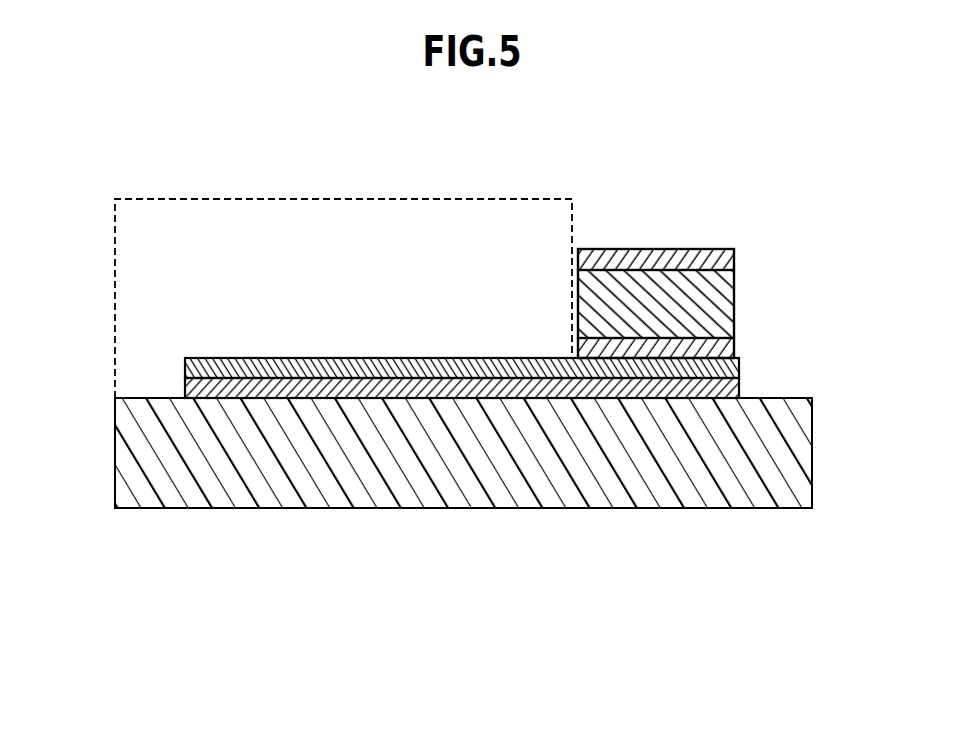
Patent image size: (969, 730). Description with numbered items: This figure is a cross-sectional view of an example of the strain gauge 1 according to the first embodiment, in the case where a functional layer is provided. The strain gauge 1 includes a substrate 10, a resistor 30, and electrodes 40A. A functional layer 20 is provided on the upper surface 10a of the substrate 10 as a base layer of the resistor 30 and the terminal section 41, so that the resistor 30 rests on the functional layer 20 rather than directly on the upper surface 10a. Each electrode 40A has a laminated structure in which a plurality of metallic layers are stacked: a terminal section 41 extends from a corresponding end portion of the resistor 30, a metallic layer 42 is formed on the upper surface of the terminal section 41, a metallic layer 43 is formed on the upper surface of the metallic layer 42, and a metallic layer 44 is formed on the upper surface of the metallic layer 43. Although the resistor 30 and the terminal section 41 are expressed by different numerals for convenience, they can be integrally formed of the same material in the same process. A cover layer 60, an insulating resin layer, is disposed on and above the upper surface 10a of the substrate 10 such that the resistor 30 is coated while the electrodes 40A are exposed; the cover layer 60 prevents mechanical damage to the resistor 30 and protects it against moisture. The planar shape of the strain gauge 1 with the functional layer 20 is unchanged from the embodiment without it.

The strain gauge 1 is at (36, 161).
The substrate 10 is at (135, 458).
The upper surface of the substrate 10a is at (195, 396).
The functional layer 20 is at (195, 388).
The resistor 30 is at (185, 352).
The electrode 40A is at (866, 243).
The terminal section 41 is at (580, 383).
The metallic layer 42 is at (736, 346).
The metallic layer 43 is at (736, 300).
The metallic layer 44 is at (736, 253).
The cover layer 60 is at (453, 198).